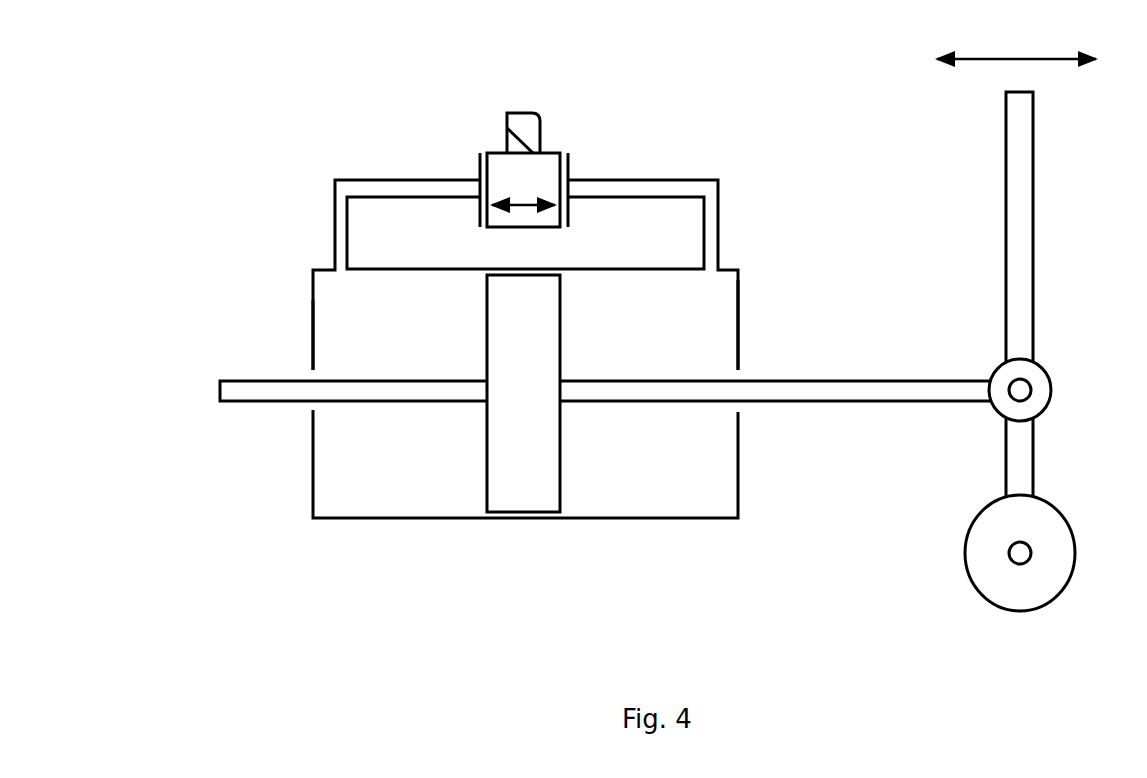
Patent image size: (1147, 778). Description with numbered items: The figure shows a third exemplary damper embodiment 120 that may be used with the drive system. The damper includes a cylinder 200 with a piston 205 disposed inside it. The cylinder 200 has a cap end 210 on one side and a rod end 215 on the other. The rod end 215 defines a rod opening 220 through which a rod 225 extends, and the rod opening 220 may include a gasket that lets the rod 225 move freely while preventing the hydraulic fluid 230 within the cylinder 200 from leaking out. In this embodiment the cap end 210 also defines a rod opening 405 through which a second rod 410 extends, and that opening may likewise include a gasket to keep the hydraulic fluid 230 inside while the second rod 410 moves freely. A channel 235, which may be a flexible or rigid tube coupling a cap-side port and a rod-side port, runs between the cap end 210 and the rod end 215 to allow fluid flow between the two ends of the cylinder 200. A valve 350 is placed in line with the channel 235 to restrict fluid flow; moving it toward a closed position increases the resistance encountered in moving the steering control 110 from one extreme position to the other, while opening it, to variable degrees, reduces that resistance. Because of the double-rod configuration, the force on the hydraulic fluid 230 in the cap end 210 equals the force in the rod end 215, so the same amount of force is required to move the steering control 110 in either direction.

The steering control 110 is at (1021, 266).
The damper embodiment 120 is at (247, 101).
The cylinder 200 is at (313, 270).
The piston 205 is at (525, 490).
The cap end 210 is at (313, 348).
The rod end 215 is at (744, 300).
The rod opening 220 is at (757, 363).
The rod 225 is at (852, 390).
The hydraulic fluid 230 is at (362, 494).
The channel 235 is at (360, 192).
The valve 350 is at (565, 143).
The rod opening 405 is at (285, 421).
The second rod 410 is at (240, 388).